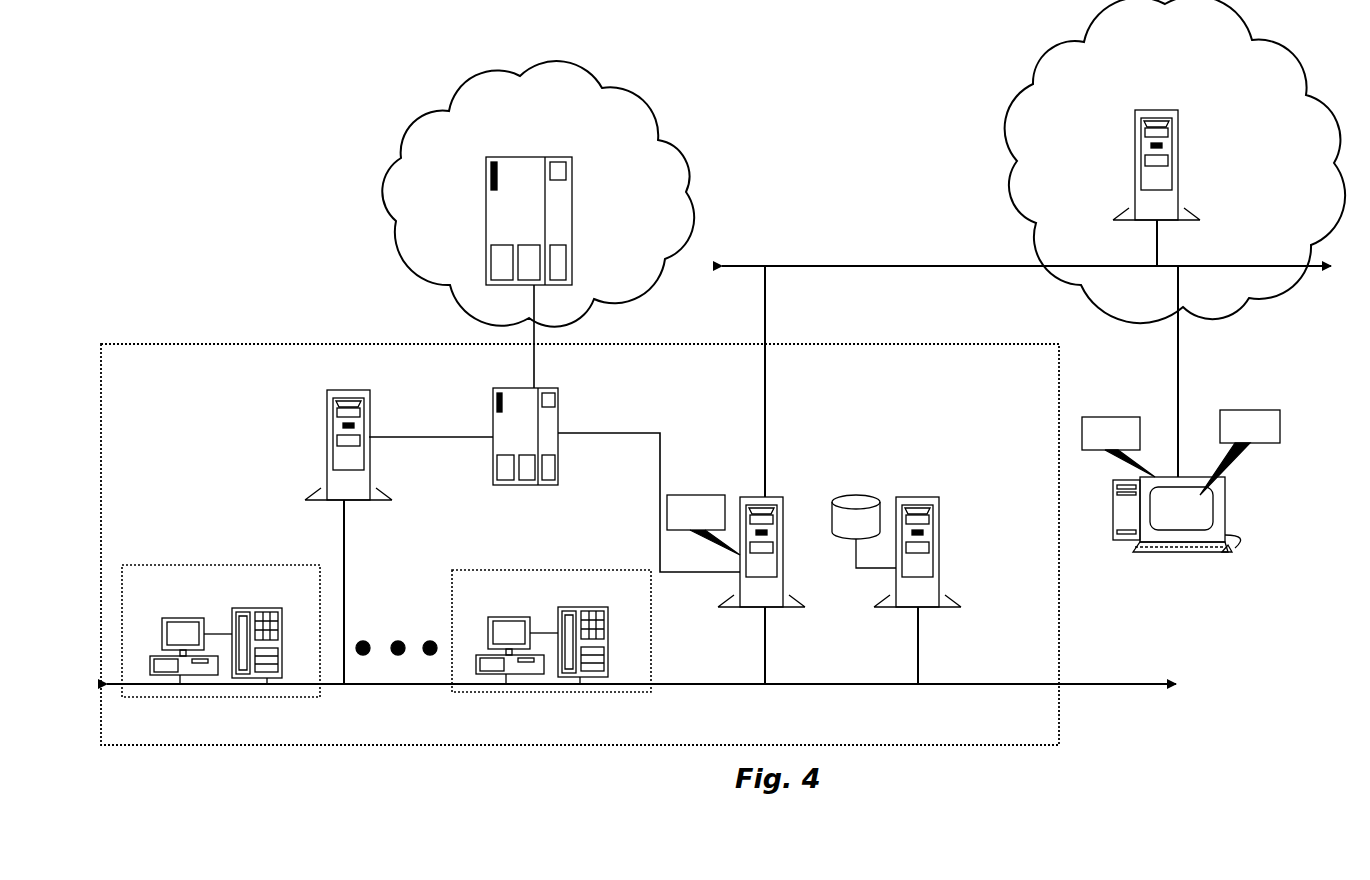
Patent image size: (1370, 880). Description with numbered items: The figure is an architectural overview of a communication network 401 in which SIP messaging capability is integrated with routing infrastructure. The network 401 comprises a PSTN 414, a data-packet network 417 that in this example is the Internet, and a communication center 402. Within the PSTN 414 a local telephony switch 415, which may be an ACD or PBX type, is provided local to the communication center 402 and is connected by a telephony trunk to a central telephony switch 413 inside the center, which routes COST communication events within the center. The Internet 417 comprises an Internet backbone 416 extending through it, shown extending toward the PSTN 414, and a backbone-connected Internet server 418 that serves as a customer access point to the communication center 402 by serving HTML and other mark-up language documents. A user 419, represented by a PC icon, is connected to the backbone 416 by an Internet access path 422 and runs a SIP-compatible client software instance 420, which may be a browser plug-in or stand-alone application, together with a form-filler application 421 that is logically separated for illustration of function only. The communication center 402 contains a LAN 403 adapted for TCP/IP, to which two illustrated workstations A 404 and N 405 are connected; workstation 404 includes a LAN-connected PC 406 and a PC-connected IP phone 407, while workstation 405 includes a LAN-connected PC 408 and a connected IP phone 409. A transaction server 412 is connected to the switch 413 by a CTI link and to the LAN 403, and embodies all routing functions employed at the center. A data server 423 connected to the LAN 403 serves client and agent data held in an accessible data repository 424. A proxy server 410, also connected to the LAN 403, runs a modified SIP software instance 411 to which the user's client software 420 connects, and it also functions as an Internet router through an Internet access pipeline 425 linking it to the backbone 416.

The communication network 401 is at (320, 220).
The communication center 402 is at (955, 330).
The LAN 403 is at (978, 685).
The workstation A 404 is at (235, 628).
The workstation N 405 is at (536, 619).
The PC 406 is at (196, 690).
The IP phone 407 is at (268, 690).
The PC 408 is at (494, 690).
The IP phone 409 is at (580, 690).
The proxy server 410 is at (788, 607).
The software instance 411 is at (672, 495).
The transaction server 412 is at (327, 460).
The central telephony switch 413 is at (558, 440).
The PSTN 414 is at (700, 224).
The local telephony switch 415 is at (572, 240).
The Internet backbone 416 is at (940, 262).
The data-packet-network 417 is at (1000, 138).
The Internet server 418 is at (1178, 178).
The user 419 is at (1228, 500).
The SIP-compatible software 420 is at (1135, 417).
The form-filler application 421 is at (1280, 425).
The Internet access path 422 is at (1180, 393).
The data server 423 is at (942, 607).
The data repository 424 is at (855, 497).
The Internet access pipeline 425 is at (765, 413).